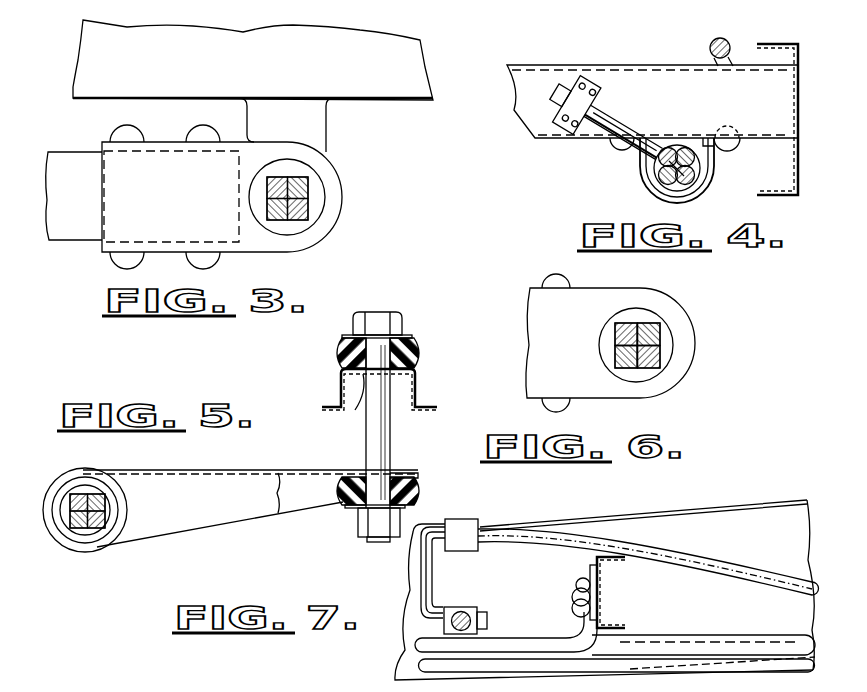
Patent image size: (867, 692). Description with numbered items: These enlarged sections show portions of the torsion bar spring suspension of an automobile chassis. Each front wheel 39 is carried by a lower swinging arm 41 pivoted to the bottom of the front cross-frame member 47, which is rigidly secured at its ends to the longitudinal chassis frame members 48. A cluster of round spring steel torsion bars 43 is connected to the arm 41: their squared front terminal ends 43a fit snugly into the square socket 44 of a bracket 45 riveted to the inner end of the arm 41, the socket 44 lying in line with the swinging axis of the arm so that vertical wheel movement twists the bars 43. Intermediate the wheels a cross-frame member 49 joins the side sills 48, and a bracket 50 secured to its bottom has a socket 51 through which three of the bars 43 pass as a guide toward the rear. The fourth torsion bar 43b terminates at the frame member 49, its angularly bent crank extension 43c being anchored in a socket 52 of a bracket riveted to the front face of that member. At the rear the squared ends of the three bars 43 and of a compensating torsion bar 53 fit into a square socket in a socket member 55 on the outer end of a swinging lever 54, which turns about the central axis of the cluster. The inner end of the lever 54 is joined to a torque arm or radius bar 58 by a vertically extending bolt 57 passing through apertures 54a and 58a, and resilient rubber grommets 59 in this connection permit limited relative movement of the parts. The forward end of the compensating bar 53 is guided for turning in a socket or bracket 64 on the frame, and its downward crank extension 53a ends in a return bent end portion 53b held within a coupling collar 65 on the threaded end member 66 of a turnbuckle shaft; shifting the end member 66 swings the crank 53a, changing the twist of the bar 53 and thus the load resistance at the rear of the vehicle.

In FIG. 7, the front wheel 39 is at (467, 596).
In FIG. 3, the lower swinging arm 41 is at (60, 240).
In FIG. 6, the lower swinging arm 41 is at (537, 308).
In FIG. 4, the torsion bars 43 is at (701, 166).
In FIG. 6, the torsion bars 43 is at (660, 353).
In FIG. 5, the torsion bars 43 is at (98, 528).
In FIG. 3, the front terminal ends 43a is at (308, 185).
In FIG. 6, the front terminal ends 43a is at (660, 325).
In FIG. 4, the fourth torsion bar 43b is at (666, 147).
In FIG. 7, the fourth torsion bar 43b is at (535, 638).
In FIG. 4, the crank extension 43c is at (610, 125).
In FIG. 7, the crank extension 43c is at (580, 580).
In FIG. 3, the square socket 44 is at (310, 203).
In FIG. 3, the bracket 45 is at (333, 213).
In FIG. 3, the front cross-frame member 47 is at (228, 66).
In FIG. 4, the longitudinal chassis frame member 48 is at (798, 176).
In FIG. 4, the cross-frame member 49 is at (665, 48).
In FIG. 7, the cross-frame member 49 is at (607, 573).
In FIG. 4, the bracket 50 is at (641, 172).
In FIG. 4, the socket 51 is at (657, 171).
In FIG. 4, the socket 52 is at (598, 100).
In FIG. 7, the socket 52 is at (600, 607).
In FIG. 4, the compensating torsion bar 53 is at (724, 39).
In FIG. 5, the compensating torsion bar 53 is at (110, 568).
In FIG. 7, the compensating torsion bar 53 is at (565, 532).
In FIG. 7, the crank extension 53a is at (432, 569).
In FIG. 7, the return bent end portion 53b is at (483, 610).
In FIG. 5, the swinging lever 54 is at (232, 470).
In FIG. 5, the aperture 54a is at (390, 473).
In FIG. 5, the socket member 55 is at (108, 535).
In FIG. 5, the bolt 57 is at (386, 433).
In FIG. 5, the torque arm 58 is at (418, 388).
In FIG. 5, the aperture 58a is at (355, 410).
In FIG. 5, the rubber grommets 59 is at (419, 346).
In FIG. 7, the socket or bracket 64 is at (474, 522).
In FIG. 7, the coupling collar 65 is at (462, 607).
In FIG. 7, the threaded end member 66 is at (444, 628).